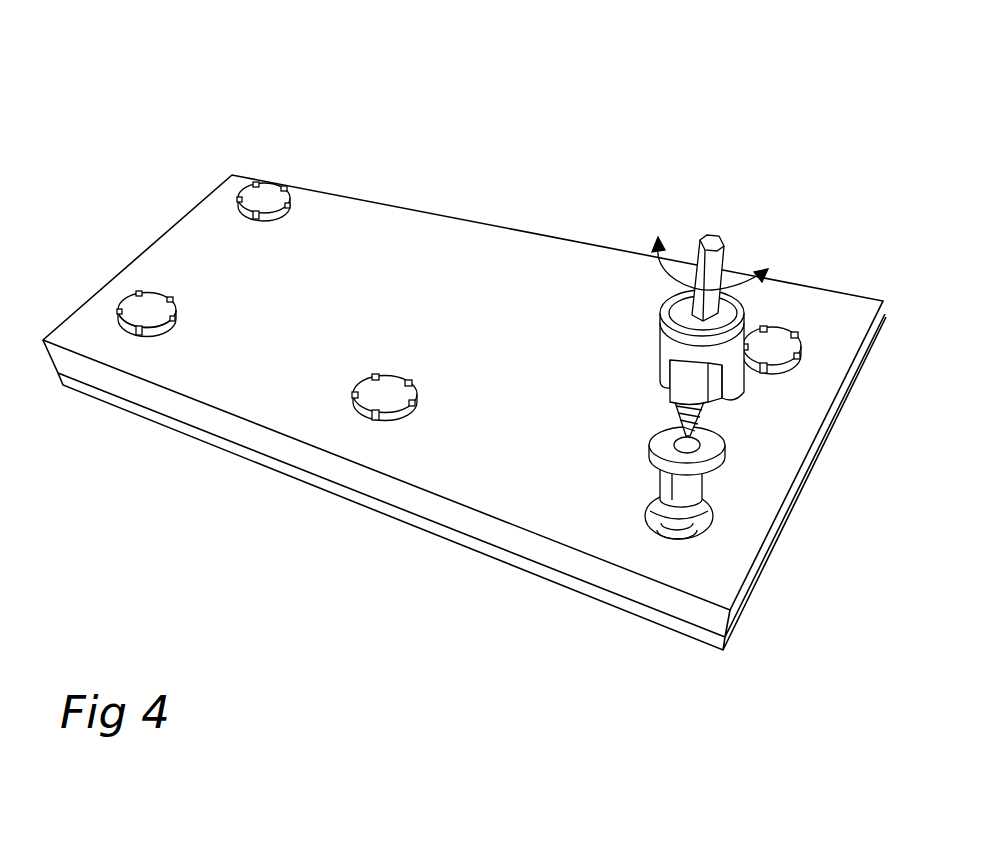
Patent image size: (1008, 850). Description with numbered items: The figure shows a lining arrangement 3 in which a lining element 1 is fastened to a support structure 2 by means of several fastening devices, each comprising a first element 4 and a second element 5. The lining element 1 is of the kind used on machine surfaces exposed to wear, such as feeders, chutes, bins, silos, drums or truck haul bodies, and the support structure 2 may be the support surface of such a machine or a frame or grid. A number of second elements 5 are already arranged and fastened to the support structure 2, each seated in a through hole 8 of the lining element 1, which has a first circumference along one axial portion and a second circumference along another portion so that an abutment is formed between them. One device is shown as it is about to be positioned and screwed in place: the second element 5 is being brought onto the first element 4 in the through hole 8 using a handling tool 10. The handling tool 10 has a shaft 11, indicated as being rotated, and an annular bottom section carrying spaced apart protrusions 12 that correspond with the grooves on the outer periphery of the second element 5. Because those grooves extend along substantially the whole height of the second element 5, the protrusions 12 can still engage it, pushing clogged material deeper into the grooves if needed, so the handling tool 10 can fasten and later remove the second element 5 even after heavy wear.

The lining element 1 is at (225, 395).
The support structure 2 is at (405, 517).
The lining arrangement 3 is at (593, 98).
The first element 4 is at (723, 460).
The second element 5 is at (147, 312).
The through hole 8 is at (712, 517).
The handling tool 10 is at (748, 272).
The shaft 11 is at (713, 242).
The protrusions 12 is at (670, 363).